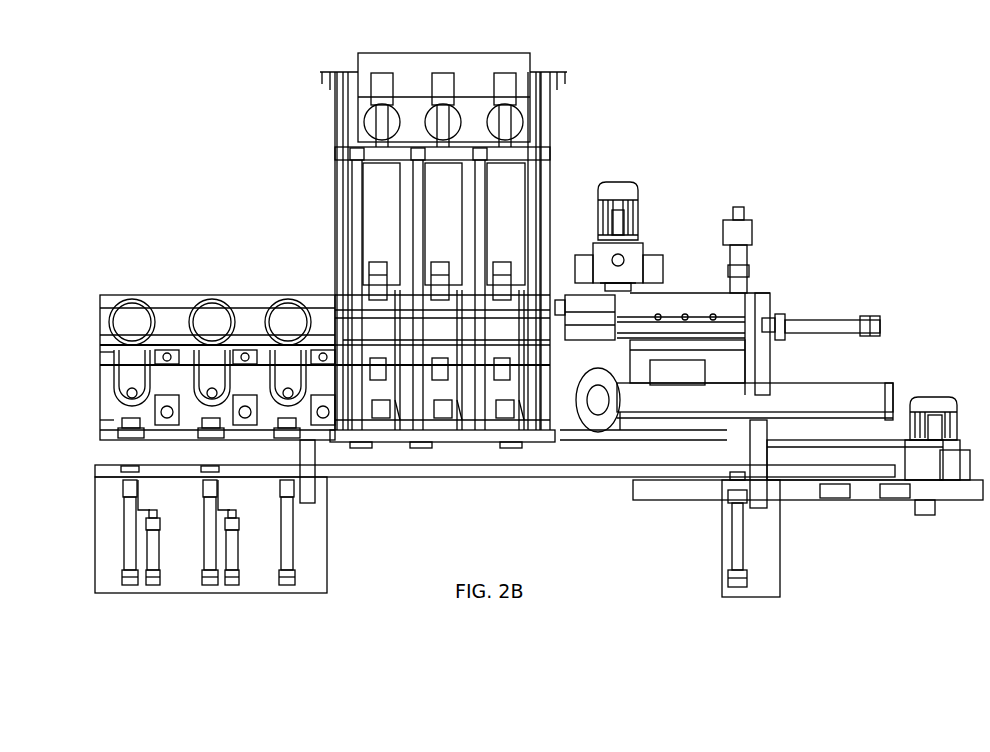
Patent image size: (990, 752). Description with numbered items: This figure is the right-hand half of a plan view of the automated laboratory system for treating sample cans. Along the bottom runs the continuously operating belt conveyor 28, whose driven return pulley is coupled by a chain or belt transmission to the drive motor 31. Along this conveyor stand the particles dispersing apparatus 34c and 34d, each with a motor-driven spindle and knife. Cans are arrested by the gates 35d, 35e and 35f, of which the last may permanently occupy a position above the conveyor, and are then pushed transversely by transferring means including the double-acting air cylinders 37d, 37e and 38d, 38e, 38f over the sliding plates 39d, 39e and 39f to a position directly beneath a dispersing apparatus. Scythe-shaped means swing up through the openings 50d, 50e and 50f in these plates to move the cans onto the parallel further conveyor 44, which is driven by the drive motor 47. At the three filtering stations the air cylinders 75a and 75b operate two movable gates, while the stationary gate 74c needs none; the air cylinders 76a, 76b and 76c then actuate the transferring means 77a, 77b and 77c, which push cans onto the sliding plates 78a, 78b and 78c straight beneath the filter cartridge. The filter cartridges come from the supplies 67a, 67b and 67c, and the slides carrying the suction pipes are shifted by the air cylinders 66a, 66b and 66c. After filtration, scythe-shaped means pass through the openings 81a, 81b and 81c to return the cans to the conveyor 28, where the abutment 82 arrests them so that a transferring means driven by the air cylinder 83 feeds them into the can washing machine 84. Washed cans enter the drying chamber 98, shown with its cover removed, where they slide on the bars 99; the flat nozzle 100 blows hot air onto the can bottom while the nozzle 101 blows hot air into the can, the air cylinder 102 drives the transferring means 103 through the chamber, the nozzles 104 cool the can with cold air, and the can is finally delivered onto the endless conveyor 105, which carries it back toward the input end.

The filter cartridge supply 67a is at (398, 107).
The filter cartridge supply 67b is at (463, 110).
The filter cartridge supply 67c is at (520, 120).
The double-acting air cylinder 66a is at (357, 212).
The double-acting air cylinder 66b is at (417, 212).
The double-acting air cylinder 66c is at (479, 212).
The double-acting air cylinder 76a is at (375, 263).
The double-acting air cylinder 76b is at (435, 263).
The double-acting air cylinder 76c is at (497, 263).
The transferring means 77a is at (340, 295).
The transferring means 77b is at (445, 300).
The transferring means 77c is at (520, 290).
The sliding plate 78a is at (376, 358).
The sliding plate 78b is at (438, 358).
The sliding plate 78c is at (500, 358).
The opening 81a is at (386, 404).
The opening 81b is at (446, 404).
The opening 81c is at (508, 404).
The double-acting air cylinder 75a is at (400, 415).
The double-acting air cylinder 75b is at (456, 415).
The stationary gate 74c is at (520, 415).
The particles dispersing apparatus 34c is at (207, 340).
The particles dispersing apparatus 34d is at (280, 340).
The opening 50d is at (121, 423).
The opening 50e is at (201, 424).
The opening 50f is at (277, 424).
The sliding plate 39d is at (131, 438).
The sliding plate 39e is at (211, 438).
The sliding plate 39f is at (288, 438).
The gate 35d is at (142, 490).
The gate 35e is at (222, 490).
The gate 35f is at (318, 452).
The double-acting air cylinder 38d is at (122, 535).
The double-acting air cylinder 38e is at (204, 562).
The double-acting air cylinder 38f is at (293, 537).
The double-acting air cylinder 37d is at (171, 547).
The double-acting air cylinder 37e is at (250, 547).
The belt conveyor 28 is at (585, 478).
The drive motor 47 is at (625, 182).
The endless conveyor 105 is at (575, 295).
The nozzles 104 is at (713, 314).
The flat nozzle 100 is at (733, 296).
The nozzle 101 is at (750, 300).
The drying chamber 98 is at (768, 300).
The transferring means 103 is at (784, 316).
The double-acting air cylinder 102 is at (845, 322).
The bars 99 is at (748, 360).
The further conveyor 44 is at (640, 362).
The can washing machine 84 is at (820, 384).
The drive motor 31 is at (932, 397).
The abutment 82 is at (770, 465).
The air cylinder 83 is at (743, 552).